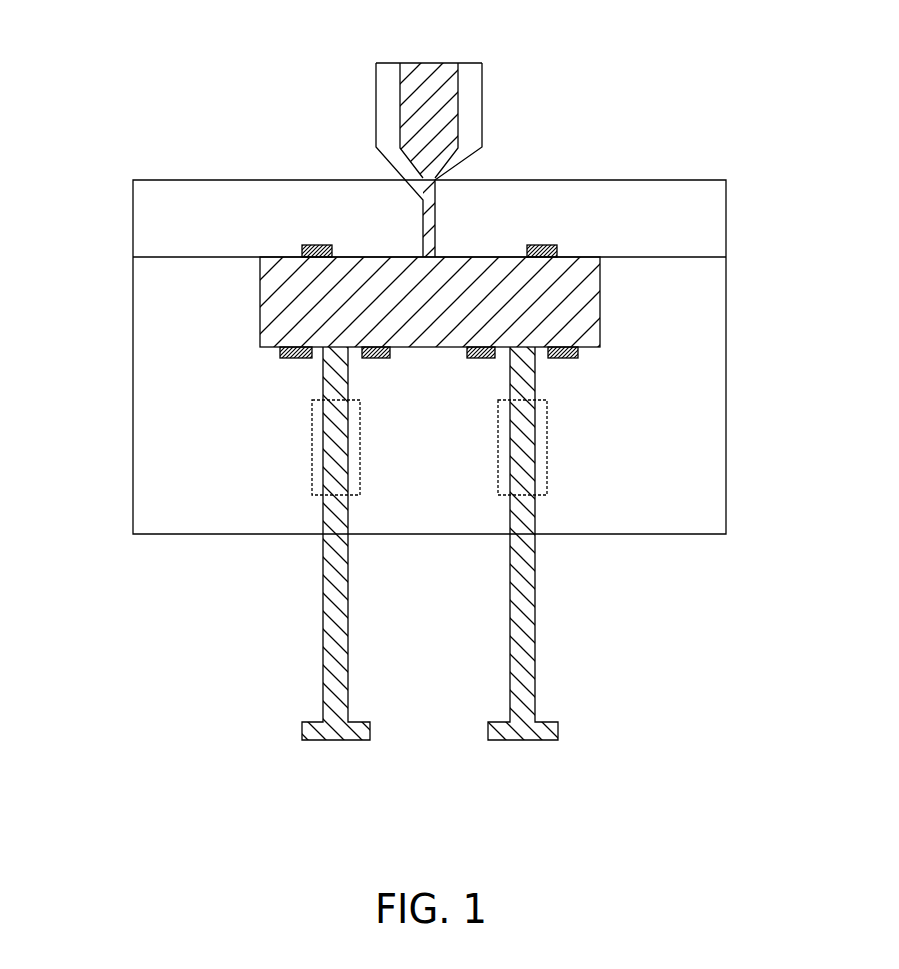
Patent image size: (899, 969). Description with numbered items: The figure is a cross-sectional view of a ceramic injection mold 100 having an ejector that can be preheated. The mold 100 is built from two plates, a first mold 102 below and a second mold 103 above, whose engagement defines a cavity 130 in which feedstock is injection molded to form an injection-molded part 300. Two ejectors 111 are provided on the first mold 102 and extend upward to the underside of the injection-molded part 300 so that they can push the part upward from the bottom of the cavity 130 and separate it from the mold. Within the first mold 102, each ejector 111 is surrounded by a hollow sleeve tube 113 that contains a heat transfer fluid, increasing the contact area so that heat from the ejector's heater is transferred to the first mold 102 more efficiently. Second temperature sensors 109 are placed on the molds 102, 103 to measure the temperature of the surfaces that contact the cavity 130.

The ceramic injection mold 100 is at (163, 52).
The first mold 102 is at (713, 355).
The second mold 103 is at (713, 222).
The second temperature sensor 109 is at (316, 245).
The ejector 111 is at (357, 740).
The sleeve tube 113 is at (360, 475).
The cavity 130 is at (475, 97).
The injection-molded part 300 is at (284, 303).